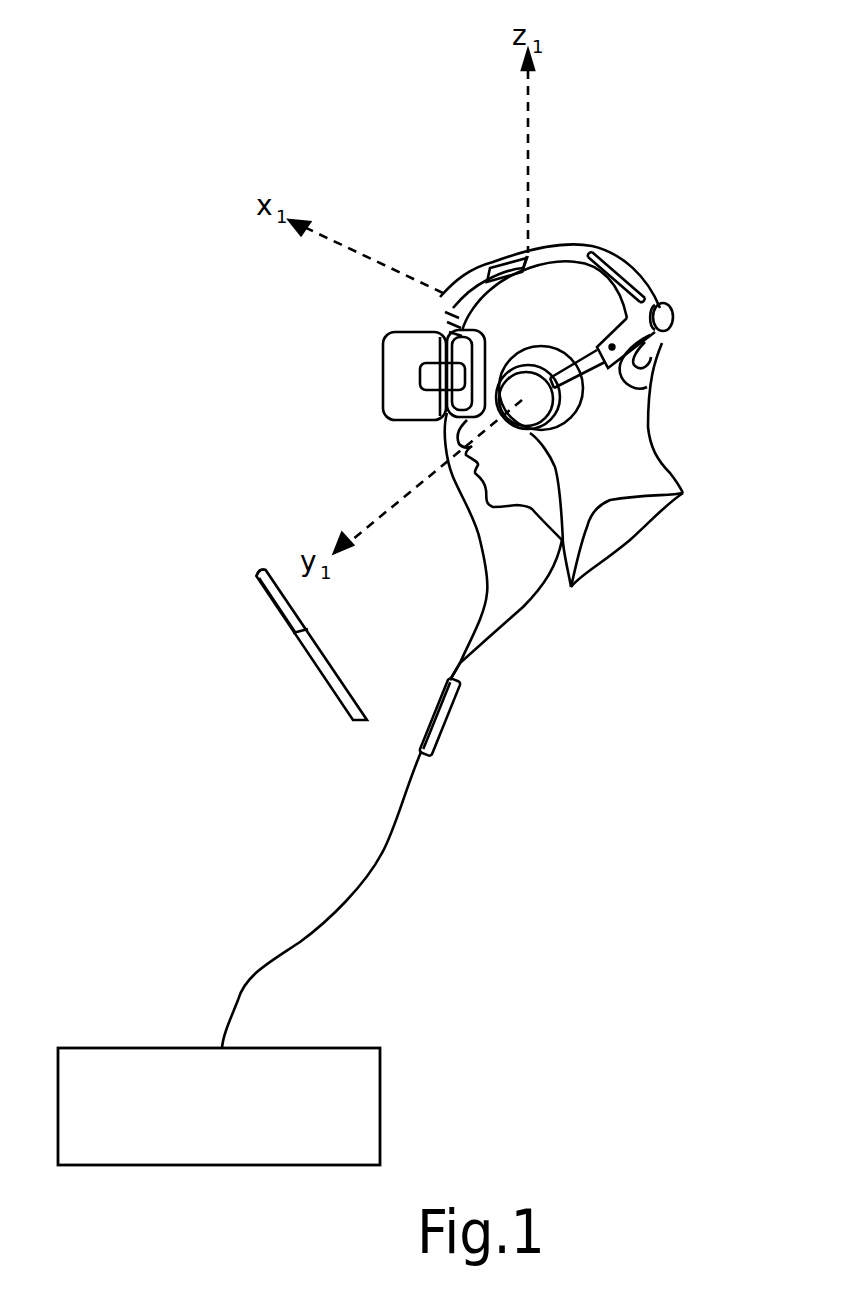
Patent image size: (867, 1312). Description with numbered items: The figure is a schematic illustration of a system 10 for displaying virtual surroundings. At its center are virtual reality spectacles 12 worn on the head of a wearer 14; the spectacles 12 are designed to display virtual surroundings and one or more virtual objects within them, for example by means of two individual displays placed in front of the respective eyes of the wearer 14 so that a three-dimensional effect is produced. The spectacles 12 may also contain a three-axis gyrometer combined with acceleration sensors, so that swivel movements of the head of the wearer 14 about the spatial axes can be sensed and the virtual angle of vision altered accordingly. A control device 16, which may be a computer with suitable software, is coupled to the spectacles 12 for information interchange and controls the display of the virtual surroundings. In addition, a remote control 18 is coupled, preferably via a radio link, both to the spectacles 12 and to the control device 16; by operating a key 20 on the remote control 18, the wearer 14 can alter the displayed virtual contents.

The system 10 is at (678, 172).
The virtual reality spectacles 12 is at (345, 353).
The wearer 14 is at (633, 432).
The control device 16 is at (238, 1122).
The remote control 18 is at (258, 642).
The key 20 is at (256, 573).